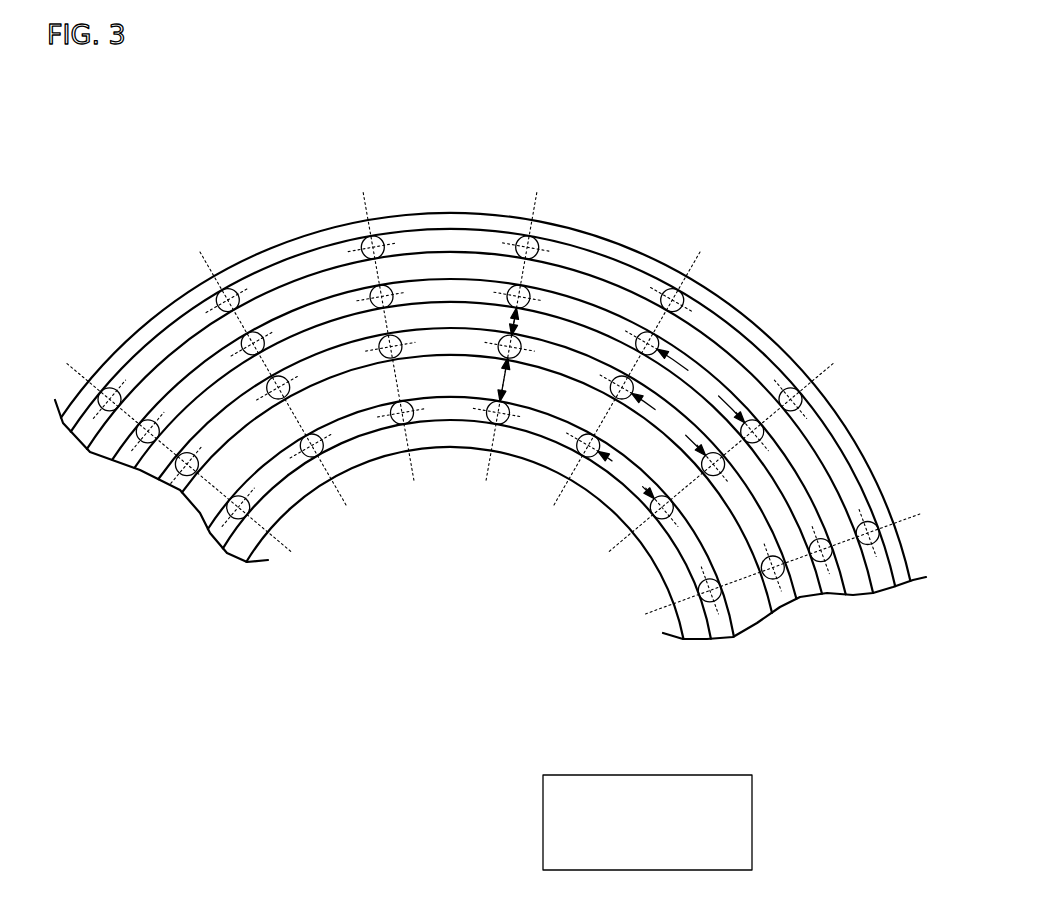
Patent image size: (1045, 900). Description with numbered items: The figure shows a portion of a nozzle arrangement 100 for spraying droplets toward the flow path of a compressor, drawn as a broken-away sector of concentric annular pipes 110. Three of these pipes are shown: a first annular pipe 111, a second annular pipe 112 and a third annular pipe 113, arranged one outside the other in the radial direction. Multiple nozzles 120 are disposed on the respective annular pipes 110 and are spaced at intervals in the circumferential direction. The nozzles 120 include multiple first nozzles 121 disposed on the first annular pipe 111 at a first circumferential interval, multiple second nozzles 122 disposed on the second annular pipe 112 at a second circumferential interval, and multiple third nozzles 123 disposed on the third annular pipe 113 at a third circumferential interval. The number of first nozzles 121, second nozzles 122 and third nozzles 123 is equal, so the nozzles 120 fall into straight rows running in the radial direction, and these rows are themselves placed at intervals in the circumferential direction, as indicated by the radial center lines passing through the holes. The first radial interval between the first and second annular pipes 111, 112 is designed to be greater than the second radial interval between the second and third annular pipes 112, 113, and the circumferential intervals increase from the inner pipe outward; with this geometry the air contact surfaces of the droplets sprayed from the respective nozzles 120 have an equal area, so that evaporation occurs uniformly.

The perforated curved plate 100 is at (703, 192).
The annular pipes 110 is at (490, 473).
The first annular pipe 111 is at (707, 612).
The second annular pipe 112 is at (768, 598).
The third annular pipe 113 is at (814, 590).
The nozzles 120 is at (493, 361).
The first nozzles 121 is at (555, 447).
The second nozzles 122 is at (503, 337).
The third nozzles 123 is at (636, 330).